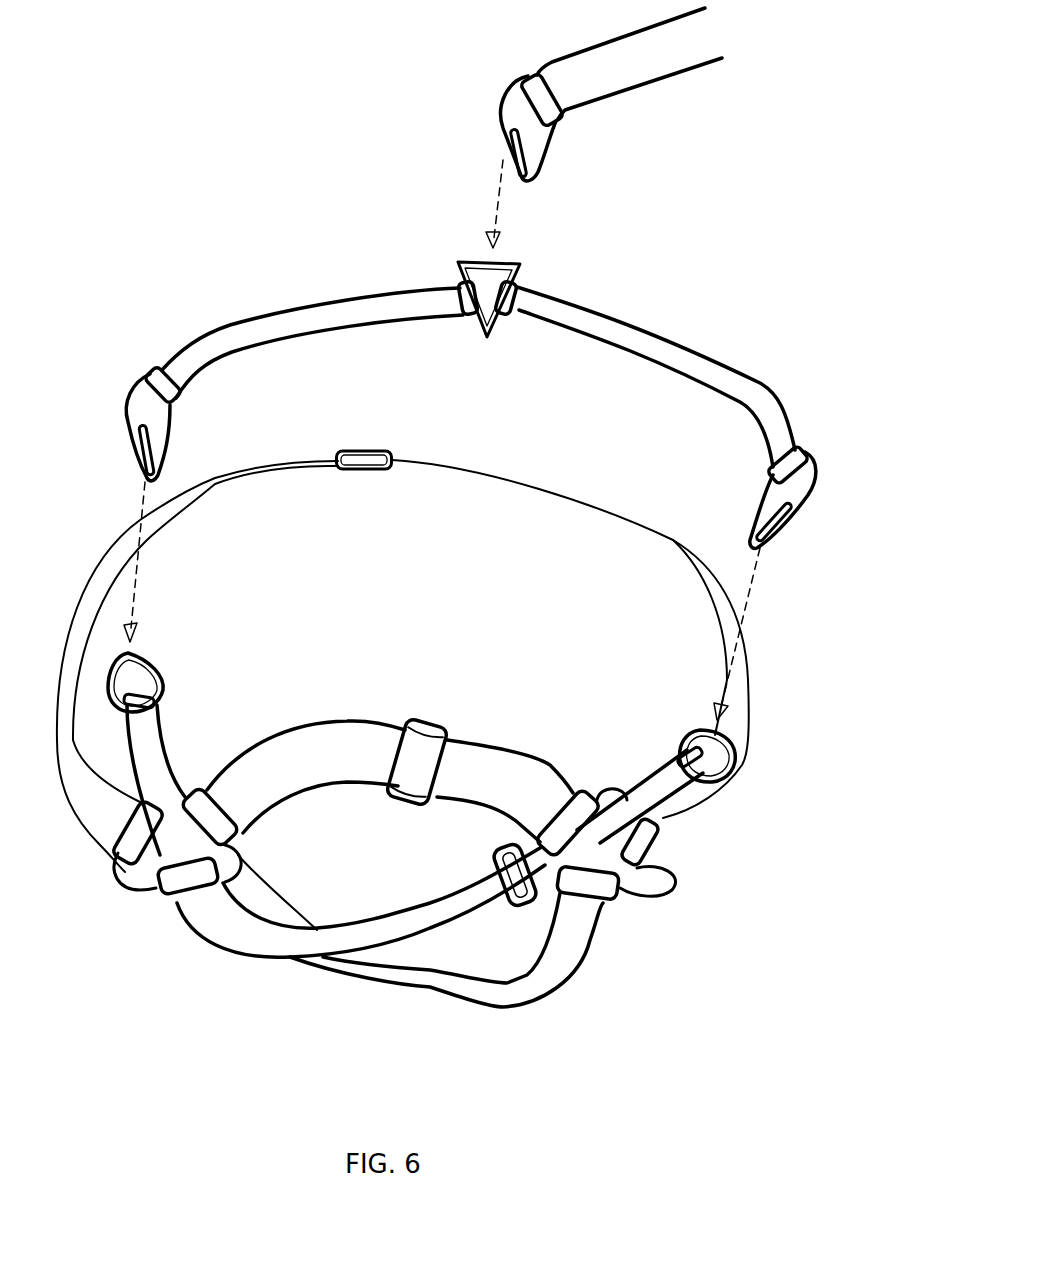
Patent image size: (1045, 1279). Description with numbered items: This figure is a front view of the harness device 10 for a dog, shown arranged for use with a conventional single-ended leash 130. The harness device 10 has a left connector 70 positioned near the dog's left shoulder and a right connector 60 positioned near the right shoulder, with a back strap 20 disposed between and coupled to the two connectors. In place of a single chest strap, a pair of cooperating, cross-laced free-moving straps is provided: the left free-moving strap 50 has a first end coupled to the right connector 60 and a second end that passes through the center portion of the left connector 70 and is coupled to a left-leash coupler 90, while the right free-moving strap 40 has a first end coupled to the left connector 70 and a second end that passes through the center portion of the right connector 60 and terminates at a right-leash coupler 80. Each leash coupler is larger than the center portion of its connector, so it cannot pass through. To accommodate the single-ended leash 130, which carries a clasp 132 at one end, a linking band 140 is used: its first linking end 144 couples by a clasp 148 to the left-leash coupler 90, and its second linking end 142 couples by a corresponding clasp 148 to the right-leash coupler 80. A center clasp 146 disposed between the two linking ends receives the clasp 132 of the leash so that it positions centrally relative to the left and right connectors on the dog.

The harness device 10 is at (208, 1067).
The back strap 20 is at (333, 740).
The right free-moving strap 40 is at (147, 758).
The left free-moving strap 50 is at (647, 805).
The right connector 60 is at (130, 882).
The left connector 70 is at (653, 883).
The right-leash coupler 80 is at (152, 670).
The left-leash coupler 90 is at (687, 730).
The single-ended leash 130 is at (647, 68).
The clasp 132 is at (505, 110).
The linking band 140 is at (380, 350).
The second linking end 142 is at (314, 312).
The first linking end 144 is at (617, 333).
The center clasp 146 is at (520, 270).
The clasp 148 is at (127, 393).